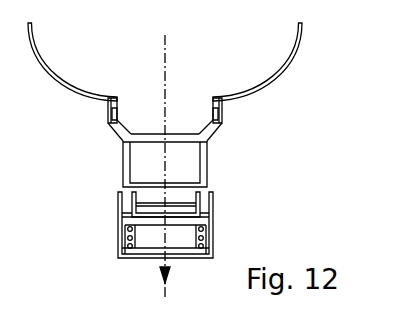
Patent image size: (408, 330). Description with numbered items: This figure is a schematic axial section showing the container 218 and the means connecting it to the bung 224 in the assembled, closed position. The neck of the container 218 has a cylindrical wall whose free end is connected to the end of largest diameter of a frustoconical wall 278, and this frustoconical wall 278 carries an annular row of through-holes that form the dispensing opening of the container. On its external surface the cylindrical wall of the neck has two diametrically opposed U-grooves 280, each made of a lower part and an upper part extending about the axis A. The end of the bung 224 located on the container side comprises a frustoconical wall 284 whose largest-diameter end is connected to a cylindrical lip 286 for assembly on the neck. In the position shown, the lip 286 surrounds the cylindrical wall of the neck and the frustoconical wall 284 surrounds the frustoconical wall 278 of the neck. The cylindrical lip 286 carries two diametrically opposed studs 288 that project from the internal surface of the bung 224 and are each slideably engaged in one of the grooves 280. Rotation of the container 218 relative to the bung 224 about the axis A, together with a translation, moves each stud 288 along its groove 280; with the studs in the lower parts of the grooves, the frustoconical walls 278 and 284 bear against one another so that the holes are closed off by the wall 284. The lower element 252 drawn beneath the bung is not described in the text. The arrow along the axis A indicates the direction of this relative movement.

The axis A is at (167, 63).
The container 218 is at (290, 83).
The bung 224 is at (209, 158).
The lower assembly / base unit 252 is at (198, 215).
The frustoconical wall 278 is at (206, 133).
The U-groove 280 is at (116, 115).
The frustoconical wall 284 is at (112, 138).
The cylindrical lip 286 is at (108, 115).
The stud 288 is at (117, 98).